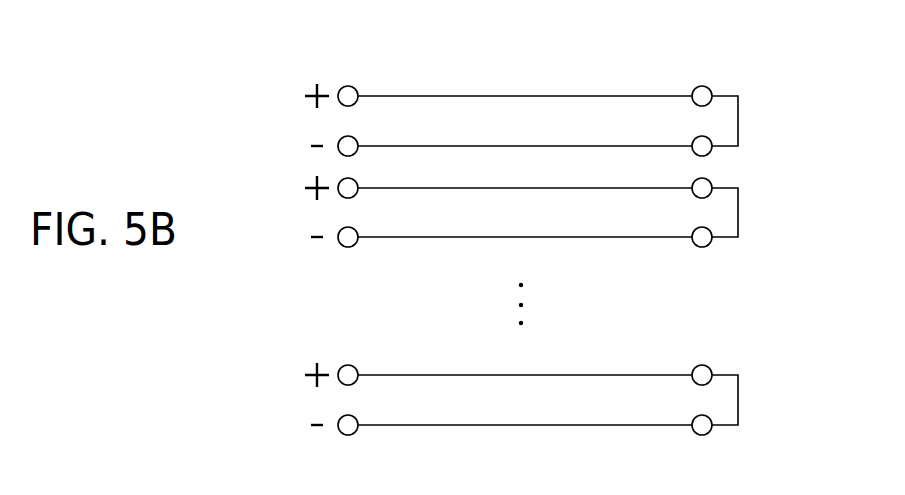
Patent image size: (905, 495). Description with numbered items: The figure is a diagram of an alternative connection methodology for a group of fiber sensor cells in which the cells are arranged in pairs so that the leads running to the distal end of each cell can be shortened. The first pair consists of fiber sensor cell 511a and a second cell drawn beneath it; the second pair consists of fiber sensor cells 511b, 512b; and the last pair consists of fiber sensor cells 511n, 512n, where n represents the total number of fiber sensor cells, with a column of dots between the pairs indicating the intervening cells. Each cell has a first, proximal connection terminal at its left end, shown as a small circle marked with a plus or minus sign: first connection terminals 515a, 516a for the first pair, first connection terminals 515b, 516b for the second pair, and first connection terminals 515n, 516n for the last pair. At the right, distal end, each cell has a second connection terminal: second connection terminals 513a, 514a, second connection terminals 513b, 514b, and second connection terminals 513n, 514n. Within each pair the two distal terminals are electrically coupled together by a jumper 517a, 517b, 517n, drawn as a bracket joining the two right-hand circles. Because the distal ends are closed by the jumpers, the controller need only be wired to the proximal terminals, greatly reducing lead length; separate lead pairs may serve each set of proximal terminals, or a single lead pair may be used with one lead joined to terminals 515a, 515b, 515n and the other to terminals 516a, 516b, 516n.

The fiber sensor cell 511a is at (553, 96).
The second connection terminal 513a is at (704, 86).
The second connection terminal 514a is at (712, 150).
The first connection terminal 515a is at (344, 86).
The first connection terminal 516a is at (339, 152).
The jumper 517a is at (738, 118).
The fiber sensor cell 511b is at (500, 187).
The fiber sensor cell 512b is at (553, 238).
The second connection terminal 513b is at (712, 185).
The second connection terminal 514b is at (712, 244).
The first connection terminal 515b is at (341, 196).
The first connection terminal 516b is at (341, 245).
The jumper 517b is at (738, 212).
The fiber sensor cell 511n is at (502, 375).
The fiber sensor cell 512n is at (553, 426).
The second connection terminal 513n is at (704, 366).
The second connection terminal 514n is at (712, 428).
The first connection terminal 515n is at (343, 367).
The first connection terminal 516n is at (341, 433).
The jumper 517n is at (738, 398).